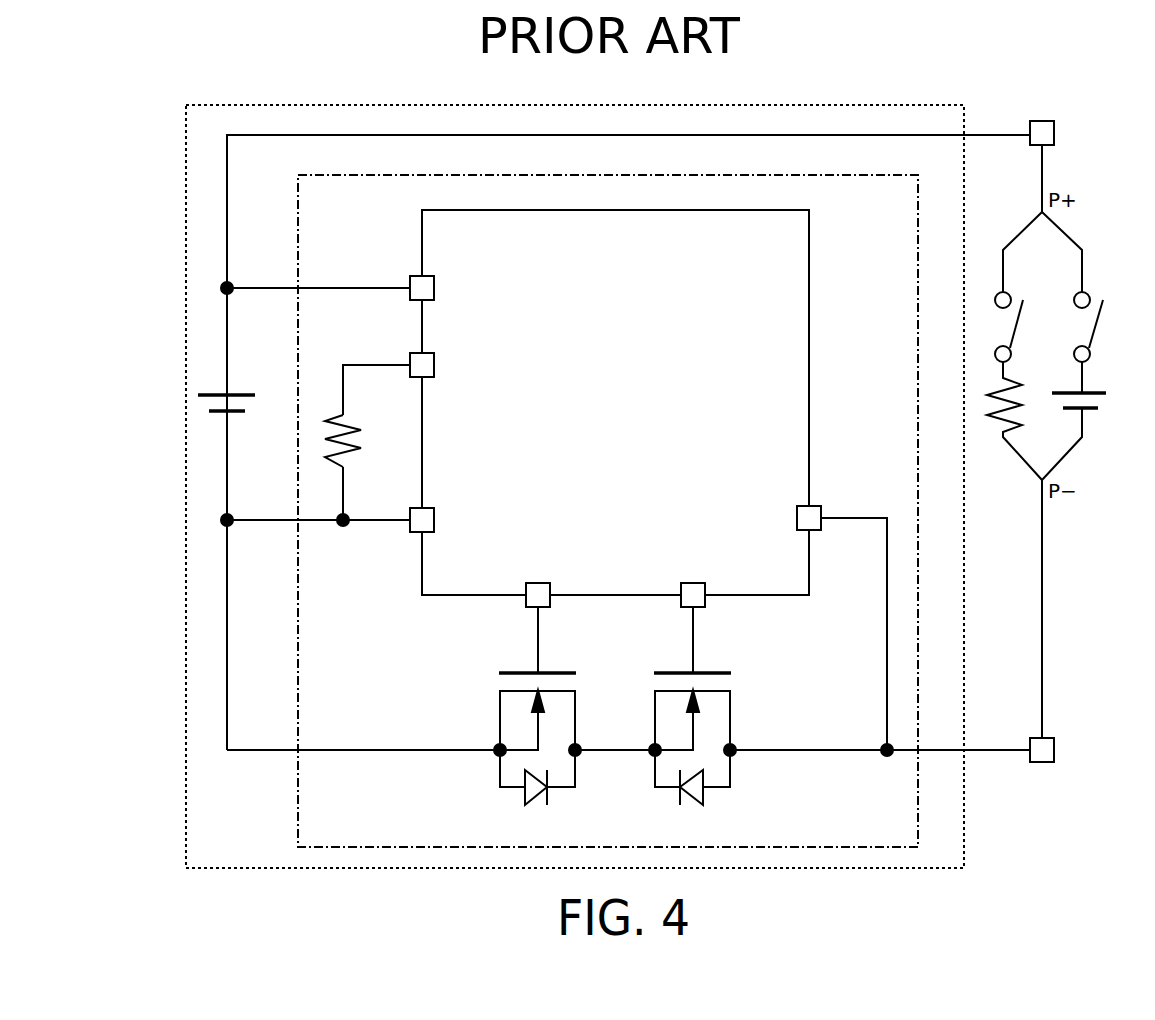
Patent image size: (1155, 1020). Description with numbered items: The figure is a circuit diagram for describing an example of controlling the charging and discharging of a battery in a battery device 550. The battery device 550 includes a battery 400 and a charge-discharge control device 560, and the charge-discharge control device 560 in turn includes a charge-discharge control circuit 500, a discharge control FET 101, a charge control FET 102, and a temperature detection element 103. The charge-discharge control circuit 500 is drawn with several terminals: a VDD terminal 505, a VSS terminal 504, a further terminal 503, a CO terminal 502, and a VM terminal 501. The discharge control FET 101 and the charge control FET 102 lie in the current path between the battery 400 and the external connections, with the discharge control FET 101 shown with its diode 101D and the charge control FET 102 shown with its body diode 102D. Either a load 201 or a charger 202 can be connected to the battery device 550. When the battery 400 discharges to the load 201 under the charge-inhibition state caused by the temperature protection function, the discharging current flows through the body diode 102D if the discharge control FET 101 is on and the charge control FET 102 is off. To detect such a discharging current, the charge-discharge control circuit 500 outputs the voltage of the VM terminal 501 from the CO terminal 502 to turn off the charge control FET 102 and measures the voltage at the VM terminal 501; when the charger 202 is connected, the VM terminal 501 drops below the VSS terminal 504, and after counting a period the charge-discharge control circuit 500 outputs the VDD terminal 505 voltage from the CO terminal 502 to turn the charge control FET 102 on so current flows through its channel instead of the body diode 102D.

The battery device 550 is at (890, 105).
The charge-discharge control device 560 is at (825, 175).
The charge-discharge control circuit 500 is at (810, 350).
The VDD terminal 505 is at (410, 278).
The VSS terminal 504 is at (410, 531).
The discharge control terminal 503 is at (540, 585).
The CO terminal 502 is at (695, 585).
The VM terminal 501 is at (817, 507).
The battery 400 is at (238, 395).
The temperature detection element 103 is at (350, 427).
The discharge control FET 101 is at (580, 703).
The charge control FET 102 is at (735, 703).
The parasitic diode of transistor 101 101D is at (545, 793).
The body diode of the charge control FET 102D is at (700, 793).
The load 201 is at (998, 420).
The charger 202 is at (1090, 413).